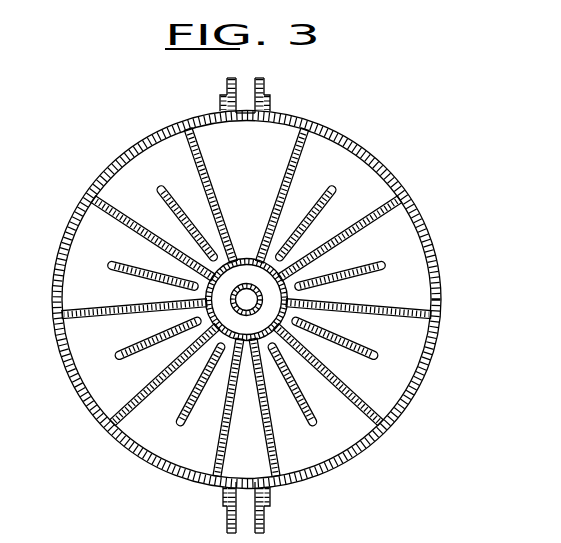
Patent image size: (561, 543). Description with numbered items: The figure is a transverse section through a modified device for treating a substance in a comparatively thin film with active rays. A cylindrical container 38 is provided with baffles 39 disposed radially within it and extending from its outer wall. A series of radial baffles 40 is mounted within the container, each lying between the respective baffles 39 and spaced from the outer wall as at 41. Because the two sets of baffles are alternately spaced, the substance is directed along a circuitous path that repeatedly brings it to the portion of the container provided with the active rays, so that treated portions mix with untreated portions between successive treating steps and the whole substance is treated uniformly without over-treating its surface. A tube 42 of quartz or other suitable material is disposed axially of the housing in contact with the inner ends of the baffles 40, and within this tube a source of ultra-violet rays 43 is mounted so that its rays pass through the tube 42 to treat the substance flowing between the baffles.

The container 38 is at (427, 361).
The baffles 39 is at (385, 213).
The radial baffles 40 is at (363, 276).
The space 41 is at (407, 242).
The tube 42 is at (242, 259).
The source of ultra-violet rays 43 is at (263, 303).